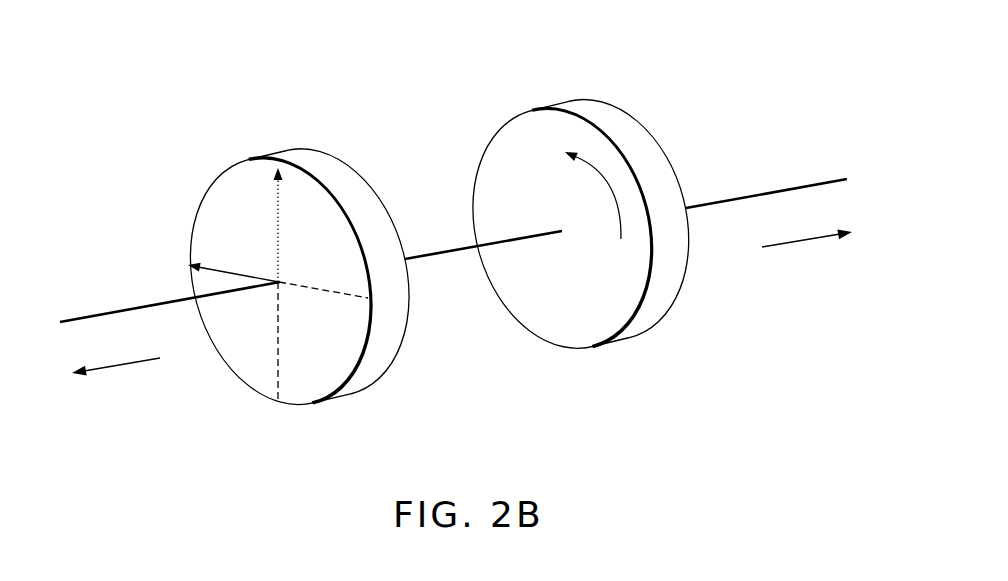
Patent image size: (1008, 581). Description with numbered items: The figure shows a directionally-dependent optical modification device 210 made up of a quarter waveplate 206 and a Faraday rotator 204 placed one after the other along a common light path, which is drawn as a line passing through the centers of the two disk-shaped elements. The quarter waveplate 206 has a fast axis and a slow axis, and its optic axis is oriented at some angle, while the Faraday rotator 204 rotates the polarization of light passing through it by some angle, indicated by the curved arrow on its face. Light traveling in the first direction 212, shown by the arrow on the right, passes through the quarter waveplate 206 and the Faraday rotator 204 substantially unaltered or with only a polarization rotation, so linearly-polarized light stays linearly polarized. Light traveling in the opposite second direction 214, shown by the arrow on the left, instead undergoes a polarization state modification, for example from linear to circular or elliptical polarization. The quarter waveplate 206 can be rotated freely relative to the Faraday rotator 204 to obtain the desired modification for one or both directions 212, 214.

The directionally-dependent optical modification device 210 is at (367, 61).
The quarter waveplate 206 is at (193, 215).
The Faraday rotator 204 is at (670, 167).
The first direction 212 is at (798, 240).
The second direction 214 is at (120, 367).